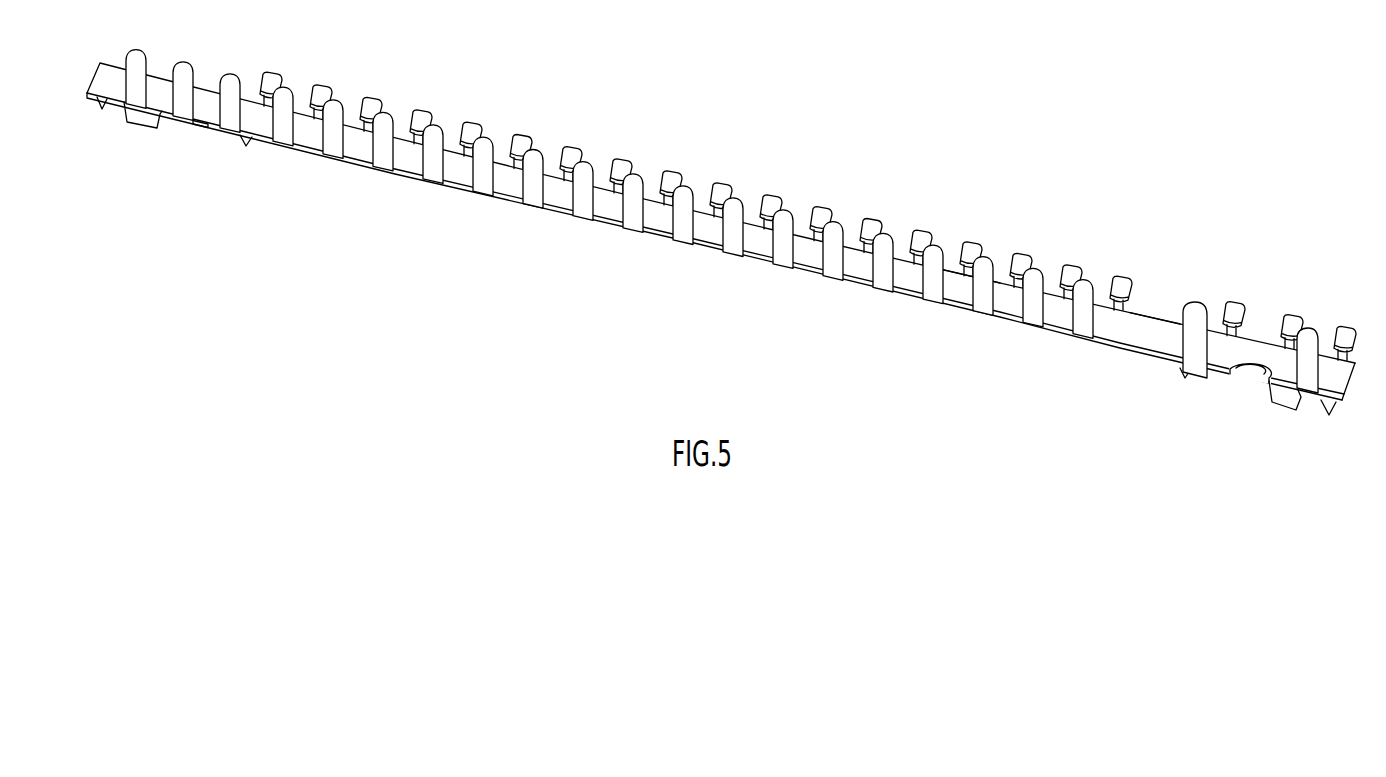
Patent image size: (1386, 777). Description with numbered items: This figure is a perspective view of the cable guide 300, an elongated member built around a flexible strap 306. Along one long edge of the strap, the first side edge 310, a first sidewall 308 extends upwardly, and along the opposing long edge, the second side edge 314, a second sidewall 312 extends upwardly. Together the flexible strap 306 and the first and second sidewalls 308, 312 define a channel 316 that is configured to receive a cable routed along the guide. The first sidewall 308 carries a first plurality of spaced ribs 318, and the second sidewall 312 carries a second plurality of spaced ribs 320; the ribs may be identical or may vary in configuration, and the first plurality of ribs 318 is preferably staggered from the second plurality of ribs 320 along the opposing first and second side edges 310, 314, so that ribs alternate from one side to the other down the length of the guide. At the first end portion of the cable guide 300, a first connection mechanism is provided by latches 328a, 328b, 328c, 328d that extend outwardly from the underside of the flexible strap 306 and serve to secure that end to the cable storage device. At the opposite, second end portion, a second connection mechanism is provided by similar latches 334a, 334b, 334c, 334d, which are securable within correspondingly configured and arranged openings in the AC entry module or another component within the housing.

The cable guide 300 is at (893, 101).
The flexible strap 306 is at (1101, 325).
The first sidewall 308 is at (962, 213).
The first side edge 310 is at (1154, 318).
The second sidewall 312 is at (784, 298).
The second side edge 314 is at (1141, 362).
The channel 316 is at (1347, 362).
The first plurality of spaced ribs 318 is at (431, 92).
The second plurality of spaced ribs 320 is at (383, 183).
The latch 328a is at (102, 109).
The latch 328b is at (141, 125).
The latch 328c is at (198, 127).
The latch 328d is at (248, 145).
The latch 334a is at (1326, 416).
The latch 334b is at (1283, 407).
The latch 334c is at (1240, 376).
The latch 334d is at (1178, 375).